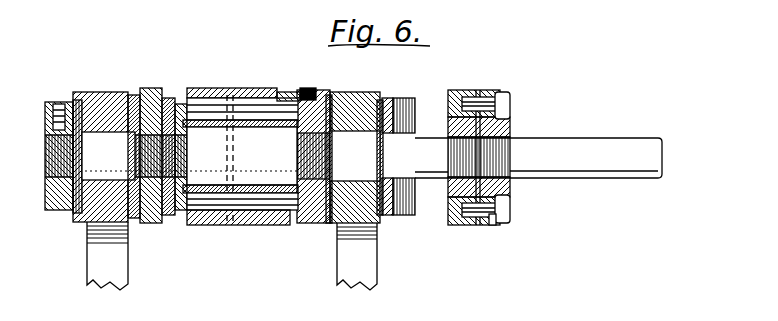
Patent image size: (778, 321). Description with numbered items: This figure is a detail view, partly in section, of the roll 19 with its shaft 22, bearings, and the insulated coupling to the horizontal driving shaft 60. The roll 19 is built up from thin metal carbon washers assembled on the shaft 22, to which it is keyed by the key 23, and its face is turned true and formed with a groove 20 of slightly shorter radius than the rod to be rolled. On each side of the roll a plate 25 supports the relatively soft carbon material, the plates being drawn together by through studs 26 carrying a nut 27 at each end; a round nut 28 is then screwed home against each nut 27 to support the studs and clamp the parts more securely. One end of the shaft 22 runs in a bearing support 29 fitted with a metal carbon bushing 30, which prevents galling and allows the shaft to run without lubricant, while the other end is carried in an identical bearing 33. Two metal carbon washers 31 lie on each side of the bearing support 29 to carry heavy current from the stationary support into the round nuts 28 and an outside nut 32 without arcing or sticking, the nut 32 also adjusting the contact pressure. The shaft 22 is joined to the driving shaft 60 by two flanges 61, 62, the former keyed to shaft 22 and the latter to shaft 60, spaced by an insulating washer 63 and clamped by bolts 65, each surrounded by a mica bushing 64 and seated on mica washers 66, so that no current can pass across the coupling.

The roll 19 is at (218, 226).
The groove 20 is at (220, 88).
The shaft 22 is at (192, 158).
The key 23 is at (284, 92).
The plate 25 is at (184, 225).
The through stud 26 is at (254, 88).
The nut 27 is at (306, 90).
The round nut 28 is at (156, 225).
The bearing support 29 is at (358, 226).
The bushing 30 is at (364, 94).
The washer 31 is at (330, 224).
The outside nut 32 is at (418, 100).
The bearing 33 is at (90, 223).
The horizontal driving shaft 60 is at (598, 146).
The flange 61 is at (450, 134).
The flange 62 is at (512, 120).
The insulating washer 63 is at (470, 228).
The mica bushing 64 is at (490, 228).
The bolt 65 is at (512, 207).
The mica washer 66 is at (500, 225).